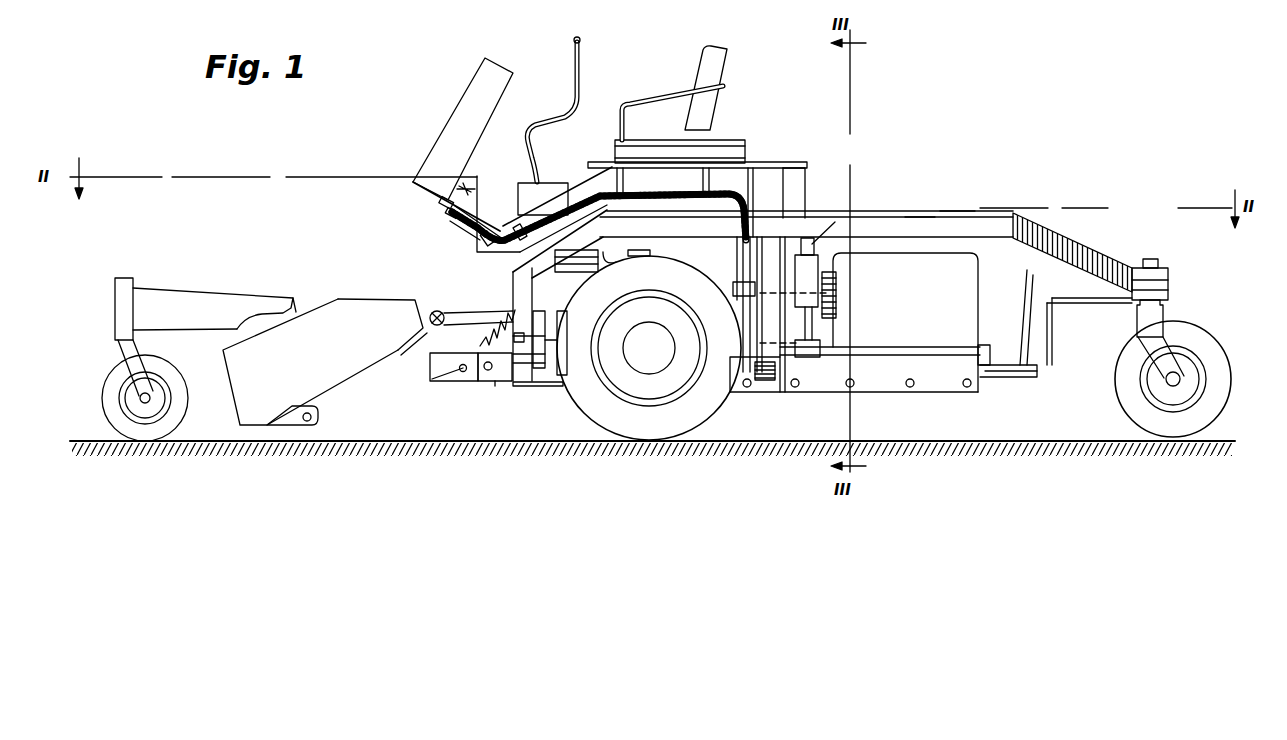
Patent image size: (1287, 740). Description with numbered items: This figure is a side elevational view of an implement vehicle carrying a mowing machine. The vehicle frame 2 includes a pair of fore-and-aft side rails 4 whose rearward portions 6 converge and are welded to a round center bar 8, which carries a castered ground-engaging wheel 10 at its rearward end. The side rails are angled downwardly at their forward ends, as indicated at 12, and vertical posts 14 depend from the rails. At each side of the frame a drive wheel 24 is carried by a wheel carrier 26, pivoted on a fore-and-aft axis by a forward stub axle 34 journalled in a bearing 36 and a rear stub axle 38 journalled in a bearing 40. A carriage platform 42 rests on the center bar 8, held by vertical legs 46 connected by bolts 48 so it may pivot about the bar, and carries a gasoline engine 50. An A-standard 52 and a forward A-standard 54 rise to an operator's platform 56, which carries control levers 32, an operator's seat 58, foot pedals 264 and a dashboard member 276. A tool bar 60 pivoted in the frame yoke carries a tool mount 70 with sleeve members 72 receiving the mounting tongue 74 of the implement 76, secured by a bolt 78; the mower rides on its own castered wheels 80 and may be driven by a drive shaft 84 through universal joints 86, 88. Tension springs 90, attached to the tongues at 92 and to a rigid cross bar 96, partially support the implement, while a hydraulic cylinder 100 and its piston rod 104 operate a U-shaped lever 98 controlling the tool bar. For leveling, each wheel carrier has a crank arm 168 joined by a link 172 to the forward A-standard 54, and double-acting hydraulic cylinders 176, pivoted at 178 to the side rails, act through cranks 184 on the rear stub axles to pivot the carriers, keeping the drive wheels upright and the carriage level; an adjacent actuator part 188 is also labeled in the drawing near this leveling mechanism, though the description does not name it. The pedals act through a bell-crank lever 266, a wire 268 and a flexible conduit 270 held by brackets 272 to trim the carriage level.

The vehicle frame 2 is at (951, 218).
The side rails 4 is at (917, 220).
The rearward portions of side rails 6 is at (1083, 258).
The center bar 8 is at (1000, 379).
The castered ground-engaging wheel 10 is at (1208, 345).
The downturned forward end portions of side rails 12 is at (524, 285).
The vertical posts 14 is at (772, 244).
The drive wheel 24 is at (598, 410).
The wheel carrier 26 is at (566, 398).
The control levers 32 is at (581, 78).
The forward stub axle 34 is at (509, 339).
The forward bearing 36 is at (524, 386).
The rear stub axle 38 is at (789, 392).
The rear bearing 40 is at (771, 393).
The carriage platform 42 is at (921, 346).
The vertical legs of angle irons 46 is at (745, 389).
The bolts 48 is at (752, 390).
The gasoline engine 50 is at (979, 287).
The A-standard 52 is at (806, 182).
The forward A-standard 54 is at (756, 178).
The operator's platform 56 is at (789, 167).
The operator's seat 58 is at (702, 72).
The tool bar 60 is at (486, 384).
The tool mount 70 is at (545, 386).
The sleeve member 72 is at (496, 386).
The mounting tongue 74 is at (430, 373).
The implement 76 is at (352, 296).
The bolt 78 is at (474, 383).
The castered wheels 80 is at (112, 386).
The drive shaft 84 is at (463, 312).
The universal joint 86 is at (437, 310).
The universal joint 88 is at (838, 286).
The tension springs 90 is at (486, 334).
The spring attachment 92 is at (452, 382).
The cross bar 96 is at (516, 252).
The U-shaped lever 98 is at (650, 253).
The hydraulic cylinder 100 is at (573, 274).
The piston rod 104 is at (614, 258).
The crank arm 168 is at (737, 278).
The link 172 is at (761, 238).
The double-acting hydraulic cylinders 176 is at (820, 265).
The cylinder pivot 178 is at (835, 222).
The crank 184 is at (806, 357).
The actuator rod 188 is at (814, 333).
The foot pedals 264 is at (468, 181).
The bell-crank lever 266 is at (440, 204).
The wire 268 is at (447, 213).
The flexible conduit 270 is at (466, 238).
The brackets 272 is at (462, 222).
The dashboard member 276 is at (458, 118).